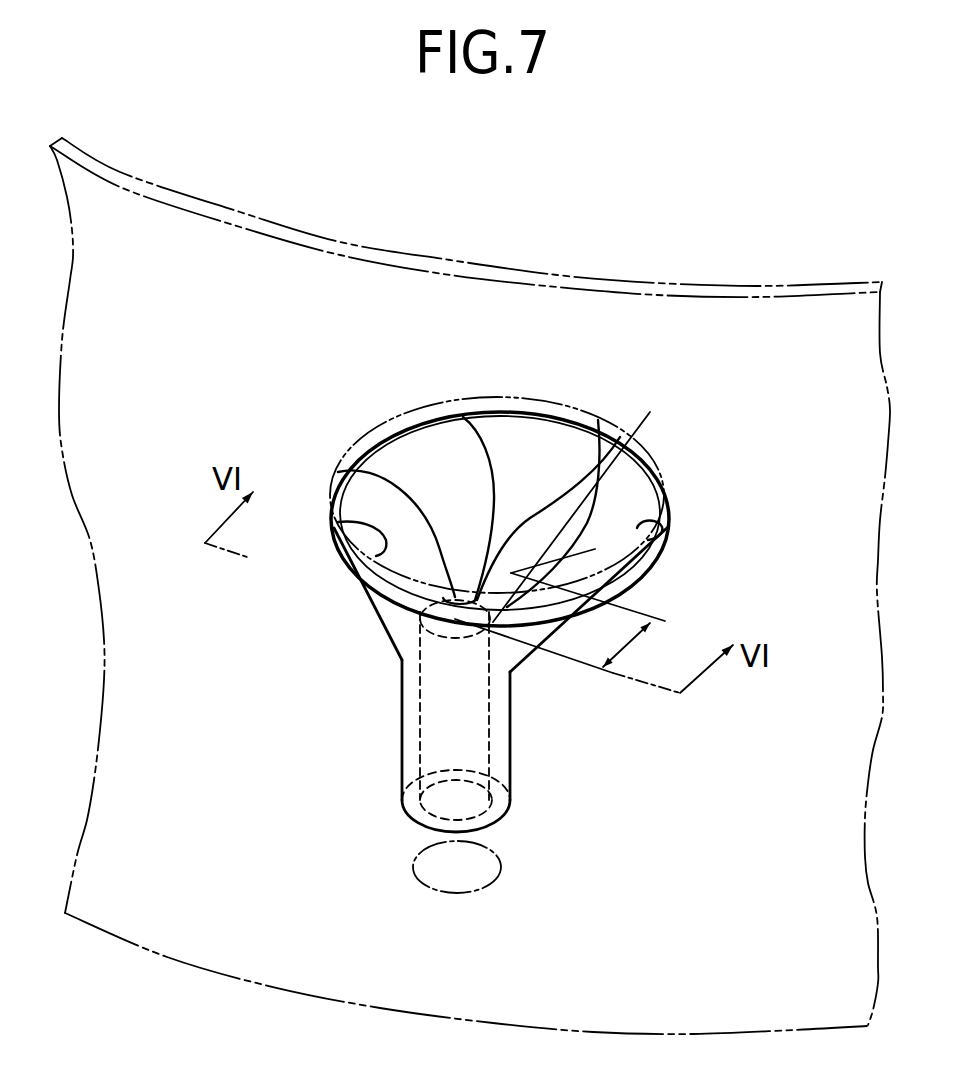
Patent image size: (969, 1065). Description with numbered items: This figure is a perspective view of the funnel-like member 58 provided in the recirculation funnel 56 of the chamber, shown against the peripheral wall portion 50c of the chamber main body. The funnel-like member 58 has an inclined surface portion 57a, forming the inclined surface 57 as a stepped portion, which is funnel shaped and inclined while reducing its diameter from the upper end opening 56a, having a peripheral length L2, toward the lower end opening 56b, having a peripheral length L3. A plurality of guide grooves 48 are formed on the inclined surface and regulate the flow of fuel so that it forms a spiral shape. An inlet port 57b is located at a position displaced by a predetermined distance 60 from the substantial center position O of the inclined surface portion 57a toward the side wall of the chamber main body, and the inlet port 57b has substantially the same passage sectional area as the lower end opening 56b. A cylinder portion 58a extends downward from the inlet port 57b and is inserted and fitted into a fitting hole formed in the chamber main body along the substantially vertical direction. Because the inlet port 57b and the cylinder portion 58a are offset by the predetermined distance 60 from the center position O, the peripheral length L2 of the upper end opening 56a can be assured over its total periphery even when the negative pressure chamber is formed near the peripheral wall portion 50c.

The guide grooves 48 is at (416, 497).
The peripheral wall portion 50c is at (453, 262).
The recirculation funnel 56 is at (676, 538).
The upper end opening 56a is at (598, 415).
The lower end opening 56b is at (502, 803).
The inclined surface portion 57 is at (657, 380).
The inclined surface portion 57a is at (610, 500).
The inlet port 57b is at (590, 504).
The funnel-like member 58 is at (627, 582).
The cylinder portion 58a is at (402, 741).
The predetermined distance 60 is at (560, 623).
The substantial center position O is at (595, 549).
The peripheral length of upper end opening L2 is at (552, 400).
The peripheral length of lower end opening L3 is at (502, 868).